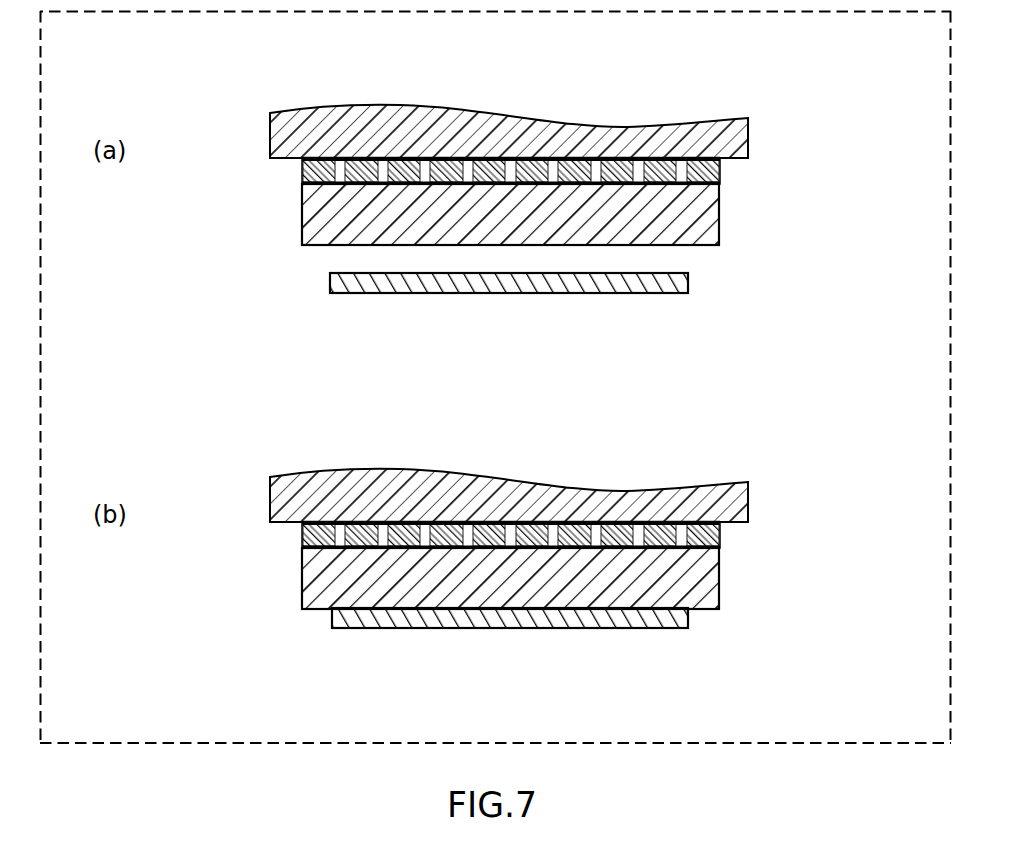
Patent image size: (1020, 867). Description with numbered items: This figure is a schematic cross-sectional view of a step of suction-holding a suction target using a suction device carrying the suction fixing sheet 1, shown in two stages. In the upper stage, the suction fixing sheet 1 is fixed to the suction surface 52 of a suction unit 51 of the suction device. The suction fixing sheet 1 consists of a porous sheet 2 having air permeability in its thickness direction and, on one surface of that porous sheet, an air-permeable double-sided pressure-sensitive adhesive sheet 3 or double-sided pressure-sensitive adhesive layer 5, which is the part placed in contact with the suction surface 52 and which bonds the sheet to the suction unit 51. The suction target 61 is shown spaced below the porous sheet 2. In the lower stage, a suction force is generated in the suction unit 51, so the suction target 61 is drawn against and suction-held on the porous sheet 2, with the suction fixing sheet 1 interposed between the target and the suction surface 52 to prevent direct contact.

The suction fixing sheet 1 is at (170, 165).
The porous sheet 2 is at (316, 218).
The double-sided pressure-sensitive adhesive sheet 3 is at (447, 358).
The double-sided pressure-sensitive adhesive layer 5 is at (302, 171).
The suction unit 51 is at (735, 141).
The suction surface 52 is at (732, 170).
The suction target 61 is at (690, 288).